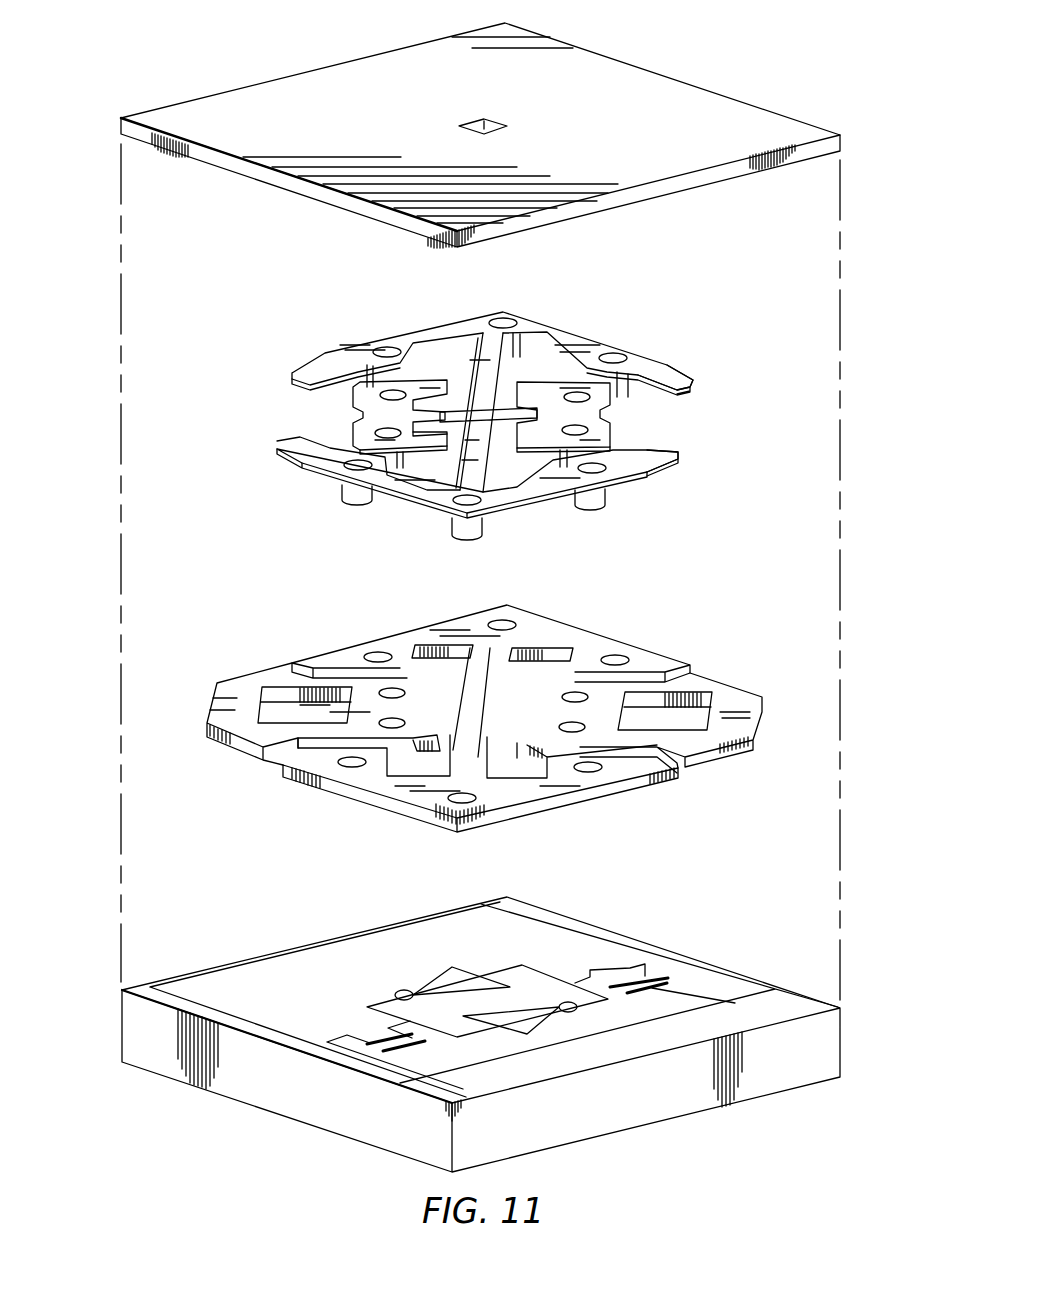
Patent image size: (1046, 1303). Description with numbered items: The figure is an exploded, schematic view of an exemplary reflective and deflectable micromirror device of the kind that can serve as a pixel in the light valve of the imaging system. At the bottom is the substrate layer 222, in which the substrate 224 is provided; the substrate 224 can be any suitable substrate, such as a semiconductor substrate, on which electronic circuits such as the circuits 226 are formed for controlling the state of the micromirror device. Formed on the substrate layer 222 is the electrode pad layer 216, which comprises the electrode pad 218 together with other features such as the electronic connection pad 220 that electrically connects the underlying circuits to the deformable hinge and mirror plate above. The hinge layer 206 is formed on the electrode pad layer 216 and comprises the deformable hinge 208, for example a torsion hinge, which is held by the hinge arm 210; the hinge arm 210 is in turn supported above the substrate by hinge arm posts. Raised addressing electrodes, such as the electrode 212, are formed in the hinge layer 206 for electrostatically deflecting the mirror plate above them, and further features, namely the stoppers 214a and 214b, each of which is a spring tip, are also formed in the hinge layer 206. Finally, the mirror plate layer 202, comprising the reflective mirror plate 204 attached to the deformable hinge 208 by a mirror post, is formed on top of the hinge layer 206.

The mirror plate layer 202 is at (97, 23).
The reflective mirror plate 204 is at (663, 83).
The hinge layer 206 is at (255, 312).
The deformable hinge 208 is at (483, 387).
The hinge arm 210 is at (437, 333).
The electrode 212 is at (358, 432).
The stopper 214a is at (672, 377).
The stopper 214b is at (682, 428).
The electrode pad layer 216 is at (182, 605).
The electrode pad 218 is at (255, 682).
The electronic connection pad 220 is at (347, 653).
The substrate layer 222 is at (95, 895).
The substrate 224 is at (301, 959).
The circuits 226 is at (585, 963).